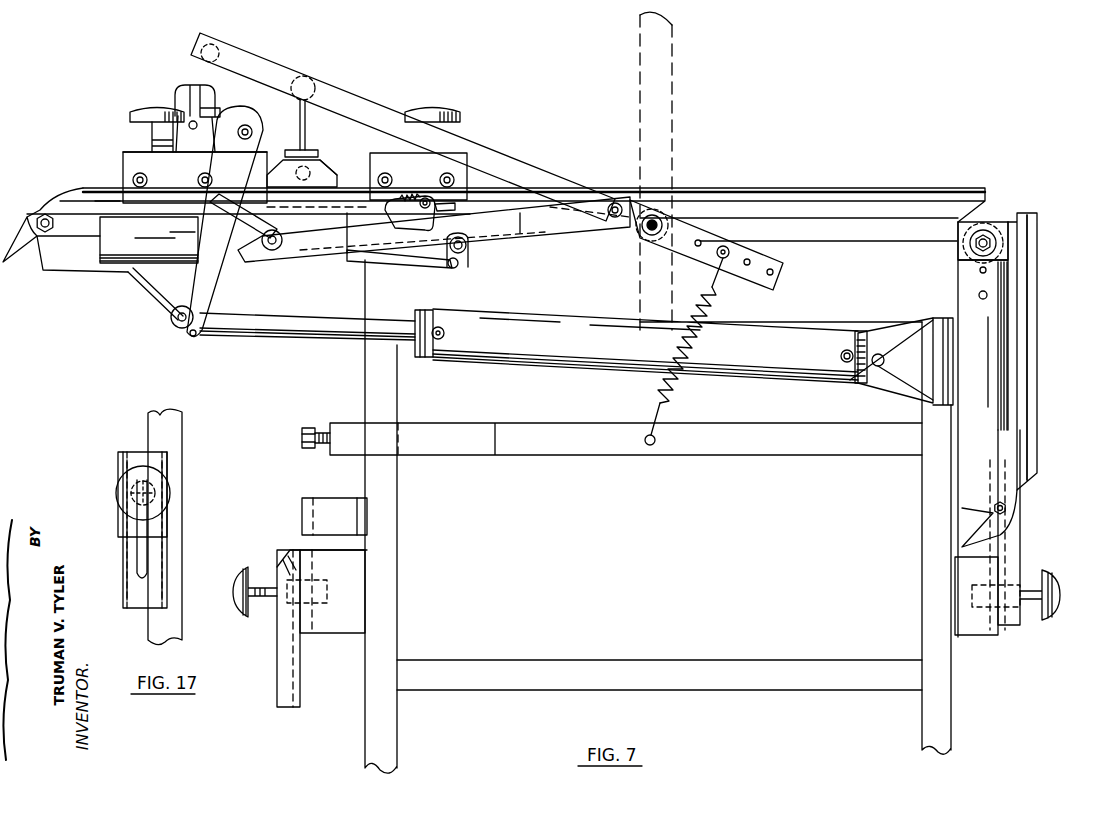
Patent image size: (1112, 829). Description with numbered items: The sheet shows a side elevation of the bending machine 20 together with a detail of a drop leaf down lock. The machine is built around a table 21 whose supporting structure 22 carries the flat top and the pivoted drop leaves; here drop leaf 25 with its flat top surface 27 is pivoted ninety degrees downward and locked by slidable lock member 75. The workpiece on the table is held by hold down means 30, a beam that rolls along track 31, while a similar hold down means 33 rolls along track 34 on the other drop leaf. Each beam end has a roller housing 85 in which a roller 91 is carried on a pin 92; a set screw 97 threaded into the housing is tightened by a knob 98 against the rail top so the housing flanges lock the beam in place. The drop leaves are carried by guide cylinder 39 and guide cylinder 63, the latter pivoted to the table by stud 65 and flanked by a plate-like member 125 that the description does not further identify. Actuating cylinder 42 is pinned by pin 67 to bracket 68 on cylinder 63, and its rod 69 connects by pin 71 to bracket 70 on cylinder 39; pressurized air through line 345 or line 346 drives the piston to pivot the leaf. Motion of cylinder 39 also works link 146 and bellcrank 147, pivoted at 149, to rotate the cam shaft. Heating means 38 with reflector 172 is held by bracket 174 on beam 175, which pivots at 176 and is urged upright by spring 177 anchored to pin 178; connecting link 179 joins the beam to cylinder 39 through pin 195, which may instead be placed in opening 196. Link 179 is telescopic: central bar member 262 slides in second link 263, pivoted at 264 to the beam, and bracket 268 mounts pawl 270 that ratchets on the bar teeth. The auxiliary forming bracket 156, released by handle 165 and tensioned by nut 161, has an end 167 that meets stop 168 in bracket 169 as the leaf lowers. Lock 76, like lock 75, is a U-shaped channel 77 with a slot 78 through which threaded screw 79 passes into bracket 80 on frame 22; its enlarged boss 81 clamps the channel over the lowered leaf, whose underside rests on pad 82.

In FIG. 7, the machine 20 is at (68, 338).
In FIG. 7, the table 21 is at (308, 398).
In FIG. 7, the supporting structure 22 is at (930, 487).
In FIG. 17, the supporting structure 22 is at (165, 617).
In FIG. 7, the drop leaf 25 is at (1040, 452).
In FIG. 7, the flat top surface 27 is at (1000, 562).
In FIG. 7, the hold down means 30 is at (367, 164).
In FIG. 7, the track 31 is at (918, 192).
In FIG. 7, the hold down means 33 is at (107, 131).
In FIG. 7, the track 34 is at (75, 195).
In FIG. 7, the heating means 38 is at (331, 166).
In FIG. 7, the guide cylinder 39 is at (120, 262).
In FIG. 7, the cylinder 42 is at (572, 352).
In FIG. 7, the guide cylinder 63 is at (985, 400).
In FIG. 7, the stud 65 is at (975, 245).
In FIG. 7, the pin 67 is at (858, 376).
In FIG. 7, the bracket 68 is at (880, 370).
In FIG. 7, the rod 69 is at (245, 325).
In FIG. 7, the bracket 70 is at (172, 287).
In FIG. 7, the pin 71 is at (174, 323).
In FIG. 7, the slidable lock member 75 is at (1030, 608).
In FIG. 7, the lock 76 is at (290, 630).
In FIG. 17, the lock 76 is at (128, 450).
In FIG. 7, the U-shaped channel 77 is at (278, 677).
In FIG. 17, the U-shaped channel 77 is at (167, 568).
In FIG. 7, the slot 78 is at (300, 665).
In FIG. 17, the slot 78 is at (147, 545).
In FIG. 7, the threaded screw 79 is at (262, 580).
In FIG. 17, the threaded screw 79 is at (118, 482).
In FIG. 7, the bracket 80 is at (310, 635).
In FIG. 17, the bracket 80 is at (118, 508).
In FIG. 7, the enlarged boss 81 is at (288, 563).
In FIG. 7, the pad 82 is at (302, 515).
In FIG. 7, the housing 85 is at (125, 160).
In FIG. 7, the roller 91 is at (205, 176).
In FIG. 7, the pin 92 is at (145, 177).
In FIG. 7, the set screw 97 is at (152, 135).
In FIG. 7, the knob 98 is at (155, 115).
In FIG. 7, the side plate 125 is at (1038, 256).
In FIG. 7, the link 146 is at (426, 265).
In FIG. 7, the bellcrank 147 is at (457, 268).
In FIG. 7, the pivot 149 is at (466, 250).
In FIG. 7, the bracket 156 is at (215, 285).
In FIG. 7, the nut 161 is at (241, 125).
In FIG. 7, the handle 165 is at (218, 210).
In FIG. 7, the end 167 is at (193, 340).
In FIG. 7, the stop 168 is at (302, 440).
In FIG. 7, the bracket 169 is at (356, 447).
In FIG. 7, the reflector 172 is at (320, 176).
In FIG. 7, the bracket 174 is at (300, 128).
In FIG. 7, the beam 175 is at (522, 162).
In FIG. 7, the pivot 176 is at (640, 236).
In FIG. 7, the spring 177 is at (668, 378).
In FIG. 7, the pin 178 is at (645, 448).
In FIG. 7, the connecting link 179 is at (558, 238).
In FIG. 7, the pin 195 is at (276, 232).
In FIG. 7, the opening 196 is at (978, 295).
In FIG. 7, the central bar member 262 is at (323, 247).
In FIG. 7, the second link 263 is at (572, 228).
In FIG. 7, the pivot 264 is at (615, 202).
In FIG. 7, the bracket 268 is at (400, 213).
In FIG. 7, the pawl 270 is at (447, 211).
In FIG. 7, the line 345 is at (843, 360).
In FIG. 7, the line 346 is at (438, 340).